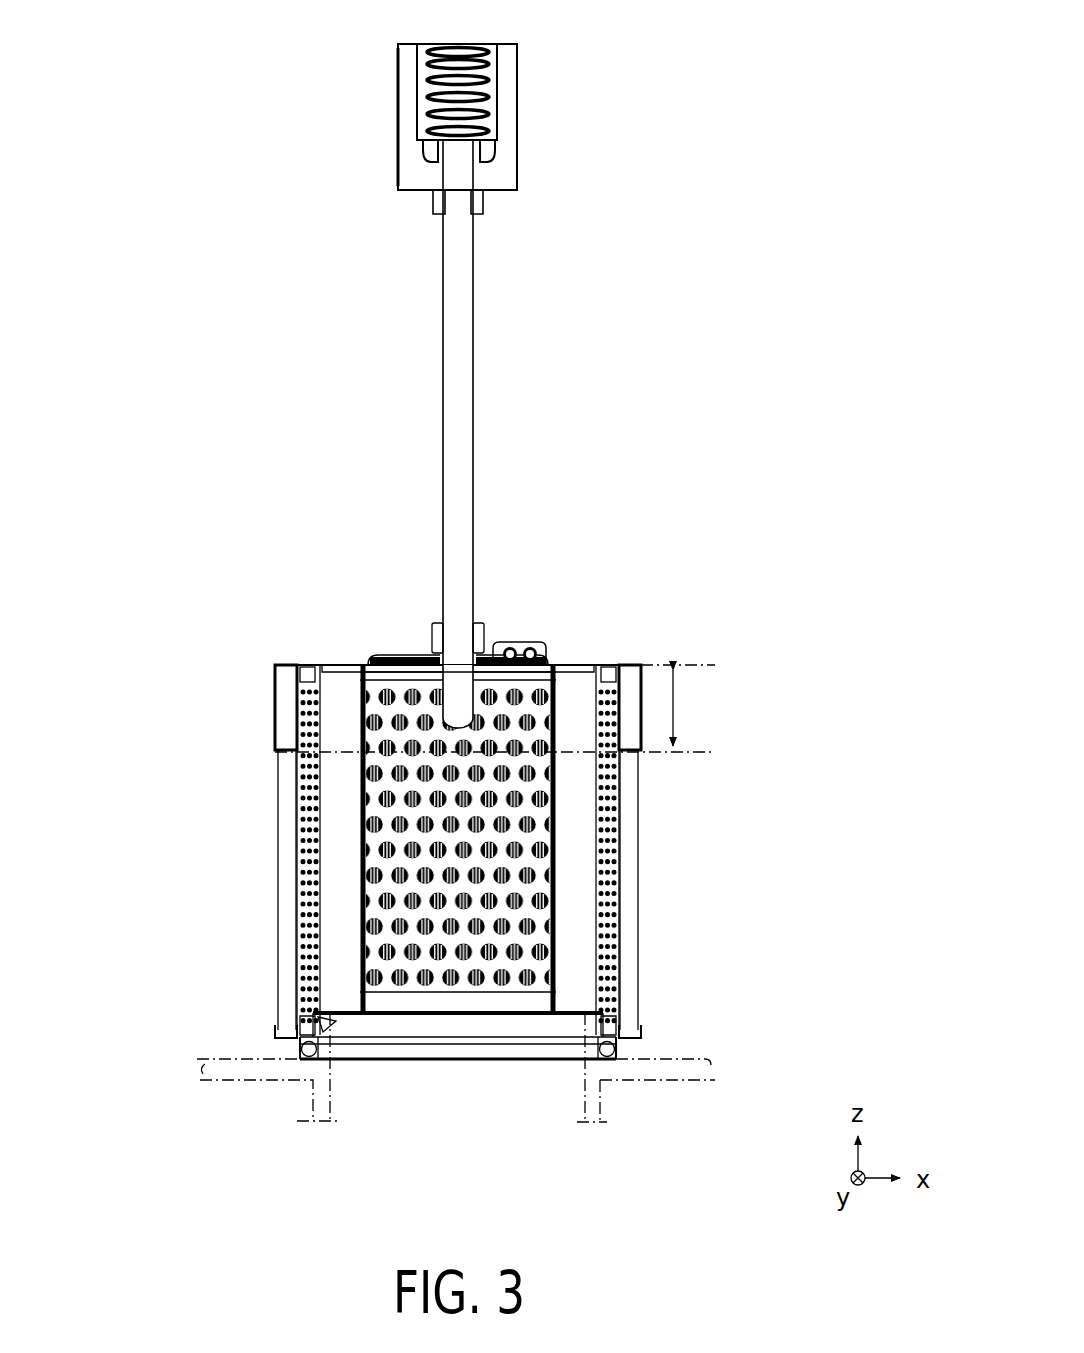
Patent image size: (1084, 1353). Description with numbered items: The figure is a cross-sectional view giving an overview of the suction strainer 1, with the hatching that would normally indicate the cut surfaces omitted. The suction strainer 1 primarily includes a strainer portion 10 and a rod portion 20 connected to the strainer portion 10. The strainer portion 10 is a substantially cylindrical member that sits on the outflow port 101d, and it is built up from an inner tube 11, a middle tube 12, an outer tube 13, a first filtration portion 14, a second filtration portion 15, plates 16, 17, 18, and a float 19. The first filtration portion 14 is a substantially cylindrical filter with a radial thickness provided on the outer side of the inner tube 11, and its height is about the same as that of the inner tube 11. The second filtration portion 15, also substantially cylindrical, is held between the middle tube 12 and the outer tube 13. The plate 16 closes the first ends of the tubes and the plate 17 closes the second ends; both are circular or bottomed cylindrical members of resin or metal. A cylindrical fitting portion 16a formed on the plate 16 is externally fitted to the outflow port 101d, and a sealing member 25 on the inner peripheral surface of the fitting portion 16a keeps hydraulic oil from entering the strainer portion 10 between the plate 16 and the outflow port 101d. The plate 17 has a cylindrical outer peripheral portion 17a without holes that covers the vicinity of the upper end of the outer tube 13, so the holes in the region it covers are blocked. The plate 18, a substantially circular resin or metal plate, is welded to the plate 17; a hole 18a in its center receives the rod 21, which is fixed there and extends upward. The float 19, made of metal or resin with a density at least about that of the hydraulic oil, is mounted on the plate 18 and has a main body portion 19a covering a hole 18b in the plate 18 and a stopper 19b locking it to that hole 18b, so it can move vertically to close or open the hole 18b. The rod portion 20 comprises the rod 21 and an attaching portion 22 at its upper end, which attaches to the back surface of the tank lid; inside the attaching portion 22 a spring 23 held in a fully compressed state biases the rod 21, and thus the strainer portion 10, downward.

The suction strainer 1 is at (746, 18).
The strainer portion 10 is at (778, 657).
The inner tube 11 is at (520, 808).
The middle tube 12 is at (615, 930).
The outer tube 13 is at (637, 962).
The first filtration portion 14 is at (575, 857).
The second filtration portion 15 is at (628, 1007).
The plate 16 is at (312, 1020).
The fitting portion 16a is at (298, 1048).
The plate 17 is at (292, 665).
The outer peripheral portion 17a is at (280, 700).
The plate 18 is at (385, 658).
The hole 18a is at (450, 655).
The hole 18b is at (545, 660).
The float 19 is at (622, 535).
The main body portion 19a is at (515, 648).
The stopper 19b is at (530, 655).
The rod portion 20 is at (583, 258).
The rod 21 is at (457, 352).
The attaching portion 22 is at (505, 177).
The spring 23 is at (487, 112).
The sealing member 25 is at (304, 1057).
The outflow port 101d is at (590, 1095).